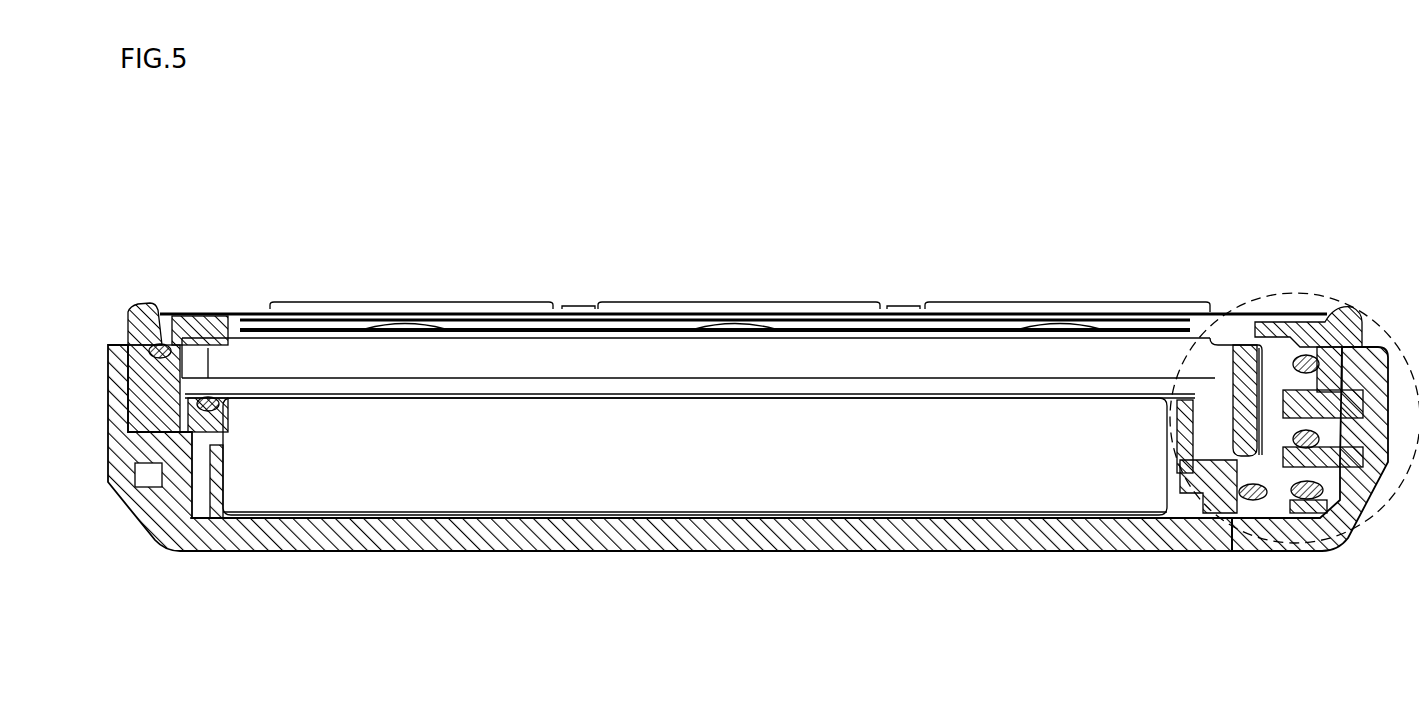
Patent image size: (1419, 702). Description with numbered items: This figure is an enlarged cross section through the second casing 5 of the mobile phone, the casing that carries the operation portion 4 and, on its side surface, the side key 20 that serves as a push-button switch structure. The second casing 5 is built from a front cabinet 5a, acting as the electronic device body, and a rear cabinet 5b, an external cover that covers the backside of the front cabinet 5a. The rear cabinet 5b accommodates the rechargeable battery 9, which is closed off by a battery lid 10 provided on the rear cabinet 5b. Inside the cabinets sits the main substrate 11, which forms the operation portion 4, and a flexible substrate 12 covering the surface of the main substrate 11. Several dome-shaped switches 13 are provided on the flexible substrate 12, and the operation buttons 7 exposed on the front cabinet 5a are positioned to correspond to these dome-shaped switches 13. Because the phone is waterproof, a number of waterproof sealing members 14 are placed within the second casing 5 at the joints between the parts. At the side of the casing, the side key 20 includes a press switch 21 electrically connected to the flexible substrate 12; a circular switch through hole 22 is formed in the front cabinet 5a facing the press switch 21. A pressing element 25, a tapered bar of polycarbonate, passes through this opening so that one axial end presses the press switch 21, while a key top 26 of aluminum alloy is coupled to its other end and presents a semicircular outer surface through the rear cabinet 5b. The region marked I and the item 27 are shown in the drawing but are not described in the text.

The operation portion 4 is at (343, 303).
The second casing 5 is at (1318, 190).
The front cabinet 5a is at (142, 305).
The rear cabinet 5b is at (110, 345).
The operation buttons 7 is at (865, 305).
The rechargeable battery 9 is at (695, 465).
The battery lid 10 is at (578, 530).
The main substrate 11 is at (943, 390).
The flexible substrate 12 is at (1212, 312).
The dome-shaped switches 13 is at (410, 328).
The waterproof sealing members 14 is at (207, 400).
The side key 20 is at (1385, 345).
The press switch 21 is at (1283, 398).
The switch through hole 22 is at (1290, 372).
The pressing element 25 is at (1353, 345).
The key top 26 is at (1374, 412).
The connecting plate 27 is at (1262, 345).
The enlarged region I is at (1240, 292).